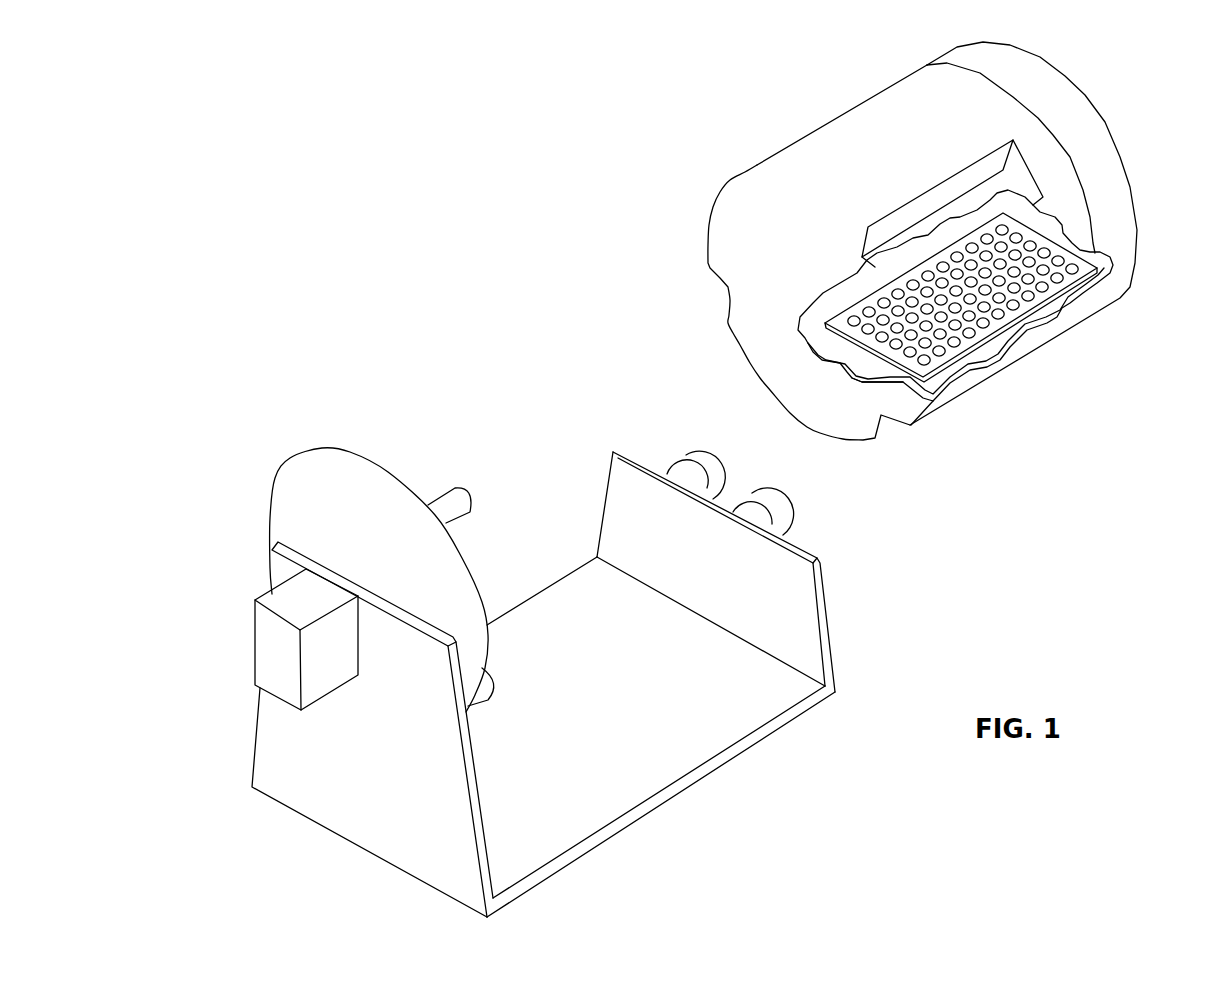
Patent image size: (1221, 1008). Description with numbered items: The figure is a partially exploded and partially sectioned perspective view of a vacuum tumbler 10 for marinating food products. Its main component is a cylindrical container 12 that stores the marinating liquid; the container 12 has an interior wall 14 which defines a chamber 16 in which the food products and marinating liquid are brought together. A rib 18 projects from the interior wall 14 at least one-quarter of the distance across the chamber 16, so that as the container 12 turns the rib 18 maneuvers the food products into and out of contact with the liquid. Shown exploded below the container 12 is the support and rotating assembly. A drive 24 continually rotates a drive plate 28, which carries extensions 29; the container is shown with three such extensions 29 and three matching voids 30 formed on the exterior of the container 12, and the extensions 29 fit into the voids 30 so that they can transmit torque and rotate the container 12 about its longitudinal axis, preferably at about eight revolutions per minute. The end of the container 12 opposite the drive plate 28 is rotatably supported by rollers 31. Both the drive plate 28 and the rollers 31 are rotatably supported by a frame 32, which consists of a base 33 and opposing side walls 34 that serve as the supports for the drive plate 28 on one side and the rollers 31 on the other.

The vacuum tumbler 10 is at (502, 287).
The cylindrical container 12 is at (817, 153).
The interior wall 14 is at (836, 347).
The chamber 16 is at (874, 370).
The rib 18 is at (987, 315).
The drive 24 is at (278, 658).
The drive plate 28 is at (298, 519).
The extensions 29 is at (447, 502).
The voids 30 is at (982, 193).
The rollers 31 is at (693, 478).
The frame 32 is at (697, 730).
The base 33 is at (627, 777).
The side walls 34 is at (783, 623).